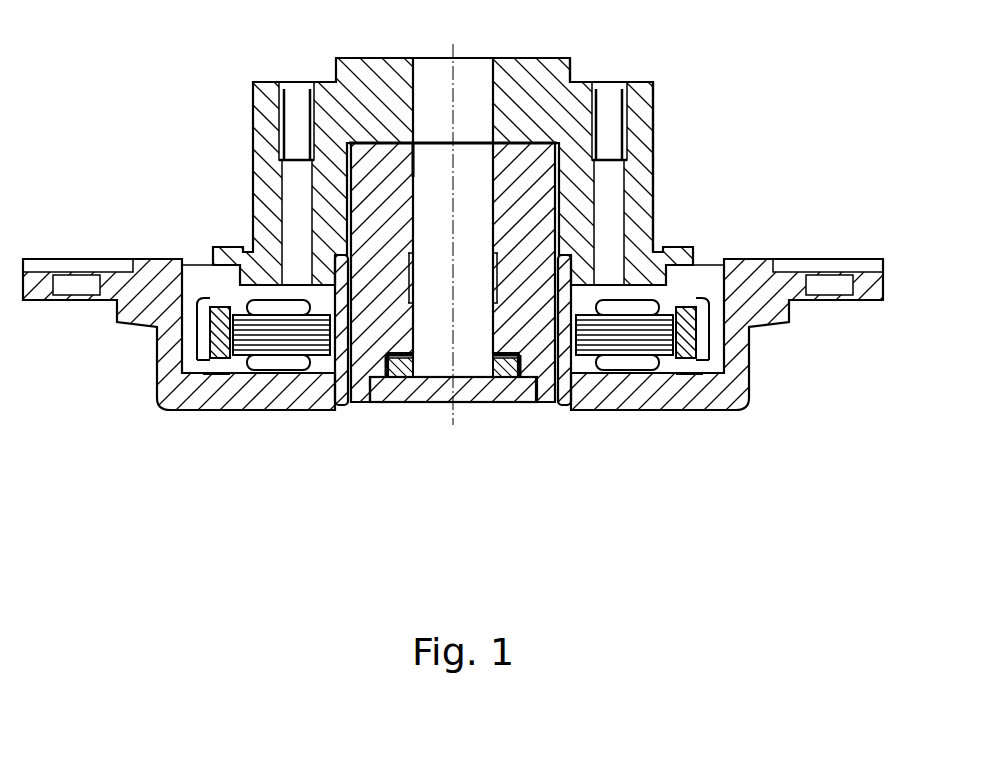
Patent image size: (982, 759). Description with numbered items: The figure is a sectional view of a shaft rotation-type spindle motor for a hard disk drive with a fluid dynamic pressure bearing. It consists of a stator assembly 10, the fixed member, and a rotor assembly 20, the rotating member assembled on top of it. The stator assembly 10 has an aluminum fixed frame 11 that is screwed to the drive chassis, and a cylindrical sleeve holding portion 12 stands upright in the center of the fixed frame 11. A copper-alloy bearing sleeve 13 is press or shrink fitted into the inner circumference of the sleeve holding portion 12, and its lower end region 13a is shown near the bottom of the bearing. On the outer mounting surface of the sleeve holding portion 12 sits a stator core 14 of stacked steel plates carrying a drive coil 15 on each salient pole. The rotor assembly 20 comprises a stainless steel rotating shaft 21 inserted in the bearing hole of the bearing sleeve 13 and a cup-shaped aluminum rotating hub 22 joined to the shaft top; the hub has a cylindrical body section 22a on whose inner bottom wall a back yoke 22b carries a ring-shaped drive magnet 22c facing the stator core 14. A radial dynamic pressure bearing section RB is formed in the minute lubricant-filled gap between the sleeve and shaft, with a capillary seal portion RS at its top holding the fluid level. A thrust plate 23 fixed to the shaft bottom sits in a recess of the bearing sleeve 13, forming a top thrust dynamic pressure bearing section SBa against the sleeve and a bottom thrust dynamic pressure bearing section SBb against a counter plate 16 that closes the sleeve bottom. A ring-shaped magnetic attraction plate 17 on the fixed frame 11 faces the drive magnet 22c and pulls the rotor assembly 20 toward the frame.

The stator assembly 10 is at (166, 416).
The fixed frame 11 is at (645, 400).
The sleeve holding portion 12 is at (343, 380).
The bearing sleeve 13 is at (541, 271).
The sleeve lower end portion 13a is at (400, 356).
The stator core 14 is at (262, 358).
The drive coil 15 is at (290, 370).
The counter plate 16 is at (447, 404).
The magnetic attraction plate 17 is at (212, 376).
The rotor assembly 20 is at (652, 71).
The rotating shaft 21 is at (483, 291).
The rotating hub 22 is at (655, 149).
The body section 22a is at (640, 215).
The back yoke 22b is at (753, 384).
The drive magnet 22c is at (707, 348).
The thrust plate 23 is at (394, 404).
The radial dynamic pressure bearing section RB is at (413, 233).
The capillary seal portion RS is at (416, 160).
The top thrust dynamic pressure bearing section SBa is at (514, 357).
The bottom thrust dynamic pressure bearing section SBb is at (505, 403).